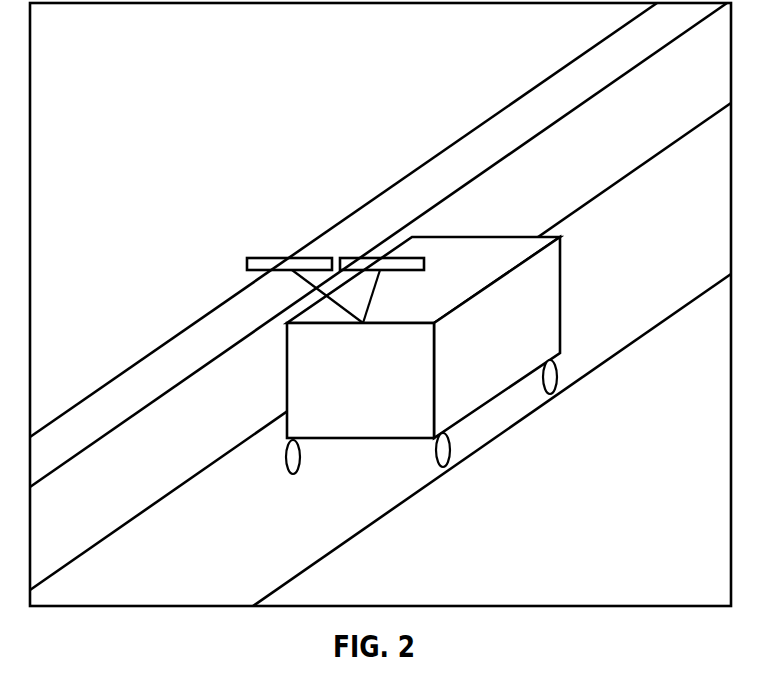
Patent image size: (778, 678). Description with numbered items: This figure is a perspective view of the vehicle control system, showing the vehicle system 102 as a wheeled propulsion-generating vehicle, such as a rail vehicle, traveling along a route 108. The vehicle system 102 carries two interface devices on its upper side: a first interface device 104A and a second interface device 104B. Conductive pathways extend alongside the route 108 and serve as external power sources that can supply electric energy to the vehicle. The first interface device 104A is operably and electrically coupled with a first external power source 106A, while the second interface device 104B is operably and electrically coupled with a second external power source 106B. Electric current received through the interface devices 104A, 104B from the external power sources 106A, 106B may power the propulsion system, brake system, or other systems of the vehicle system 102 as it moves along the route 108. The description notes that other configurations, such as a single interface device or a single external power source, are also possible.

The vehicle system 102 is at (537, 342).
The first interface device 104A is at (260, 255).
The second interface device 104B is at (368, 255).
The first external power source 106A is at (497, 110).
The second external power source 106B is at (598, 92).
The route 108 is at (135, 517).